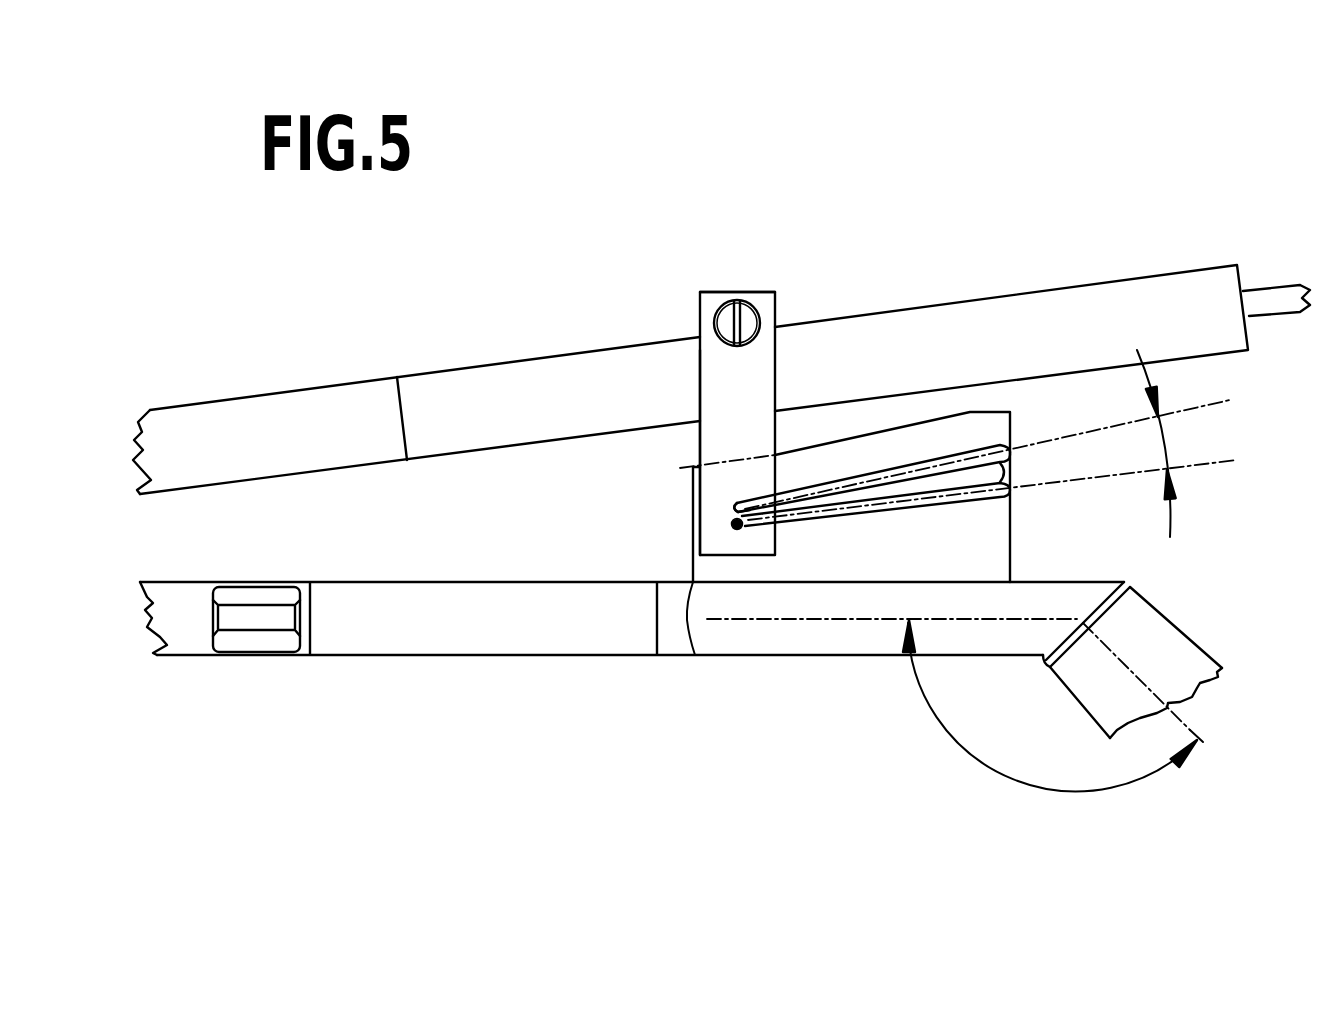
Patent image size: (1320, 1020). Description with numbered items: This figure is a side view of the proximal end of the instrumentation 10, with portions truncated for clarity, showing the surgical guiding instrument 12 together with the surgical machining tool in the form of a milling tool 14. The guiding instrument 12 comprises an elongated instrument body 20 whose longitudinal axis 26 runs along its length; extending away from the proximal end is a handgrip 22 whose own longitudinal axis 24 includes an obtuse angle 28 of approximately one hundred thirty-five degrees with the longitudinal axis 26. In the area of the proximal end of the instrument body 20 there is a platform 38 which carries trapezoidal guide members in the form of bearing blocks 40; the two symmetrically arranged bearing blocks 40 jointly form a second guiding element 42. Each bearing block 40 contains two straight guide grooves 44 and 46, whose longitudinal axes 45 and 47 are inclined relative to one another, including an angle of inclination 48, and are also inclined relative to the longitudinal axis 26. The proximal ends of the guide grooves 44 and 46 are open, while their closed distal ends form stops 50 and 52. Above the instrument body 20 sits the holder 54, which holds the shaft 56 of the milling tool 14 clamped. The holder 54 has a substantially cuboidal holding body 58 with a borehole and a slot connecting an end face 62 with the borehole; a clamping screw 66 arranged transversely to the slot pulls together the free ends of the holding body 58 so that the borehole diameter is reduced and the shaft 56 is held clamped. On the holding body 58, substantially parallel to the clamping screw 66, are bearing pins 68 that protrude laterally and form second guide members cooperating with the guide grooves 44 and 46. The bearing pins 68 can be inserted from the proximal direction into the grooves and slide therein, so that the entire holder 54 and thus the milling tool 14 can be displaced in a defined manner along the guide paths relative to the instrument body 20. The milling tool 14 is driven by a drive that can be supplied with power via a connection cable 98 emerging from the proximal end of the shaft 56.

The instrumentation 10 is at (214, 324).
The surgical guiding instrument 12 is at (413, 688).
The milling tool 14 is at (368, 348).
The instrument body 20 is at (197, 640).
The handgrip 22 is at (1190, 655).
The longitudinal axis of the handgrip 24 is at (1188, 727).
The longitudinal axis of the instrument body 26 is at (723, 620).
The obtuse angle 28 is at (993, 767).
The platform 38 is at (1107, 578).
The bearing block 40 is at (995, 423).
The second guiding element 42 is at (873, 566).
The guide groove 44 is at (925, 500).
The longitudinal axis of guide groove 45 is at (1087, 480).
The guide groove 46 is at (927, 470).
The longitudinal axis of guide groove 47 is at (1067, 437).
The angle of inclination 48 is at (1165, 441).
The stop 50 is at (742, 530).
The stop 52 is at (740, 503).
The holder 54 is at (800, 295).
The shaft 56 is at (497, 382).
The holding body 58 is at (707, 385).
The end face 62 is at (720, 292).
The clamping screw 66 is at (747, 318).
The bearing pin 68 is at (733, 525).
The connection cable 98 is at (1297, 292).